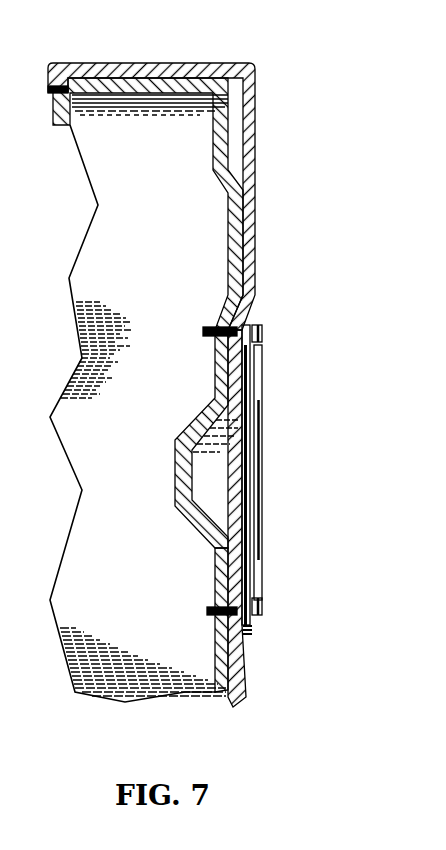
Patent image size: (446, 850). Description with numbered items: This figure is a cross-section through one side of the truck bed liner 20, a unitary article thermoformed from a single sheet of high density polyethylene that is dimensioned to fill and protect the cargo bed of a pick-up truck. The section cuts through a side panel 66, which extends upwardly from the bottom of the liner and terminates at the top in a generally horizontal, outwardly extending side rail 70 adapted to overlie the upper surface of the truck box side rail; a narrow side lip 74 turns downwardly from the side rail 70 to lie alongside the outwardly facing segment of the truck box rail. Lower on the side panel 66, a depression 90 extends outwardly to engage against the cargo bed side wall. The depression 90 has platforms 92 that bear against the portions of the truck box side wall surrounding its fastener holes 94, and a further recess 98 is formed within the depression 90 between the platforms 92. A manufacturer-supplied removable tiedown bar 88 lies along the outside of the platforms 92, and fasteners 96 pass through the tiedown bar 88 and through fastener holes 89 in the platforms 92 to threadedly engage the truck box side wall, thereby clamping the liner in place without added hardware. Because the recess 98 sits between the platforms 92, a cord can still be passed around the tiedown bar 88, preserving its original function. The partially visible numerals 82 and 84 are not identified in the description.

The truck bed liner 20 is at (158, 52).
The side rail 70 is at (82, 65).
The side lip 74 is at (47, 83).
The side panel 66 is at (257, 689).
The panel 82 is at (114, 398).
The panel surface 84 is at (113, 499).
The tiedown bar 88 is at (262, 448).
The fastener hole 89 is at (232, 300).
The depression 90 is at (253, 637).
The platform 92 is at (242, 349).
The fastener hole 94 is at (218, 328).
The fastener 96 is at (261, 325).
The recess 98 is at (202, 477).